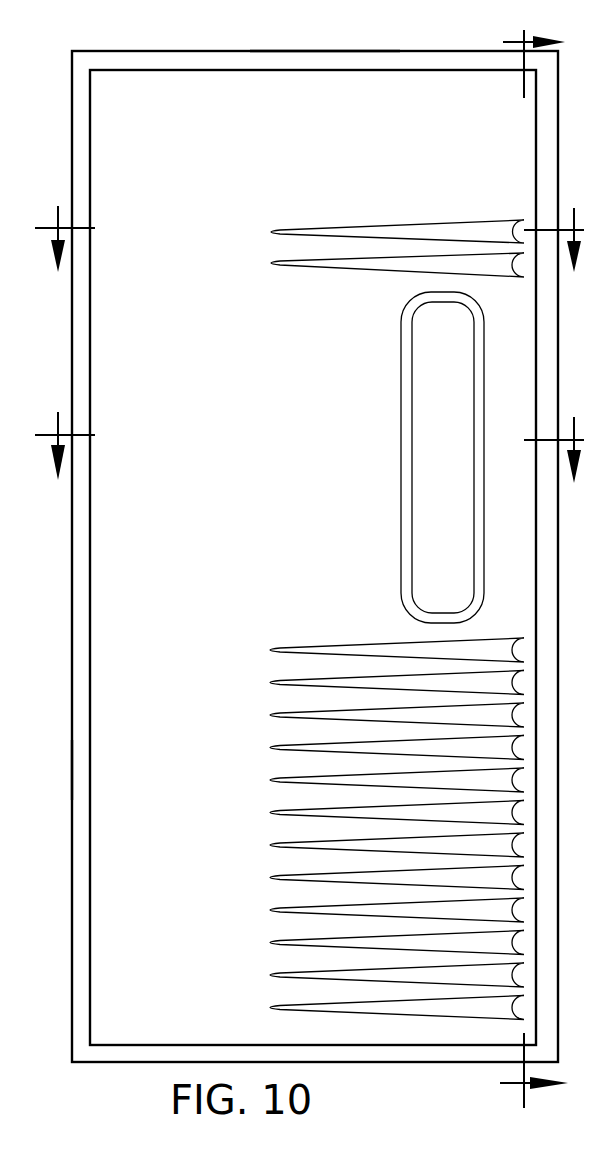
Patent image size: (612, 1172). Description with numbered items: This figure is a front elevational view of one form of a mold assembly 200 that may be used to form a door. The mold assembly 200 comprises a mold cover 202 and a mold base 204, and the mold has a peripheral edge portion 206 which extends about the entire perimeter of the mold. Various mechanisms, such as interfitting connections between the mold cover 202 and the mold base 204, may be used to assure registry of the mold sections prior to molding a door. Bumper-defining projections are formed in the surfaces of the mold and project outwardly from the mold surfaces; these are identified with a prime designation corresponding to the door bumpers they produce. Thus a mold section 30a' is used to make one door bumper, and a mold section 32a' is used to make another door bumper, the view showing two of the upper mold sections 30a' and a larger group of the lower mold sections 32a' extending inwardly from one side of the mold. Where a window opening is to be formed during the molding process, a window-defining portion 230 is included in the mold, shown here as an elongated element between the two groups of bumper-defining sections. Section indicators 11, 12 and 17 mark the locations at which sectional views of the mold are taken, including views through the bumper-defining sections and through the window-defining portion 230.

The mold assembly 200 is at (113, 1025).
The mold cover 202 is at (110, 890).
The mold base 204 is at (72, 766).
The peripheral edge portion 206 is at (322, 42).
The mold section 30a' is at (397, 250).
The window-defining portion 230 is at (398, 435).
The mold section 32a' is at (343, 800).
The section line 11- 11 is at (529, 566).
The section line 12- 12 is at (316, 236).
The section line 17- 17 is at (316, 444).